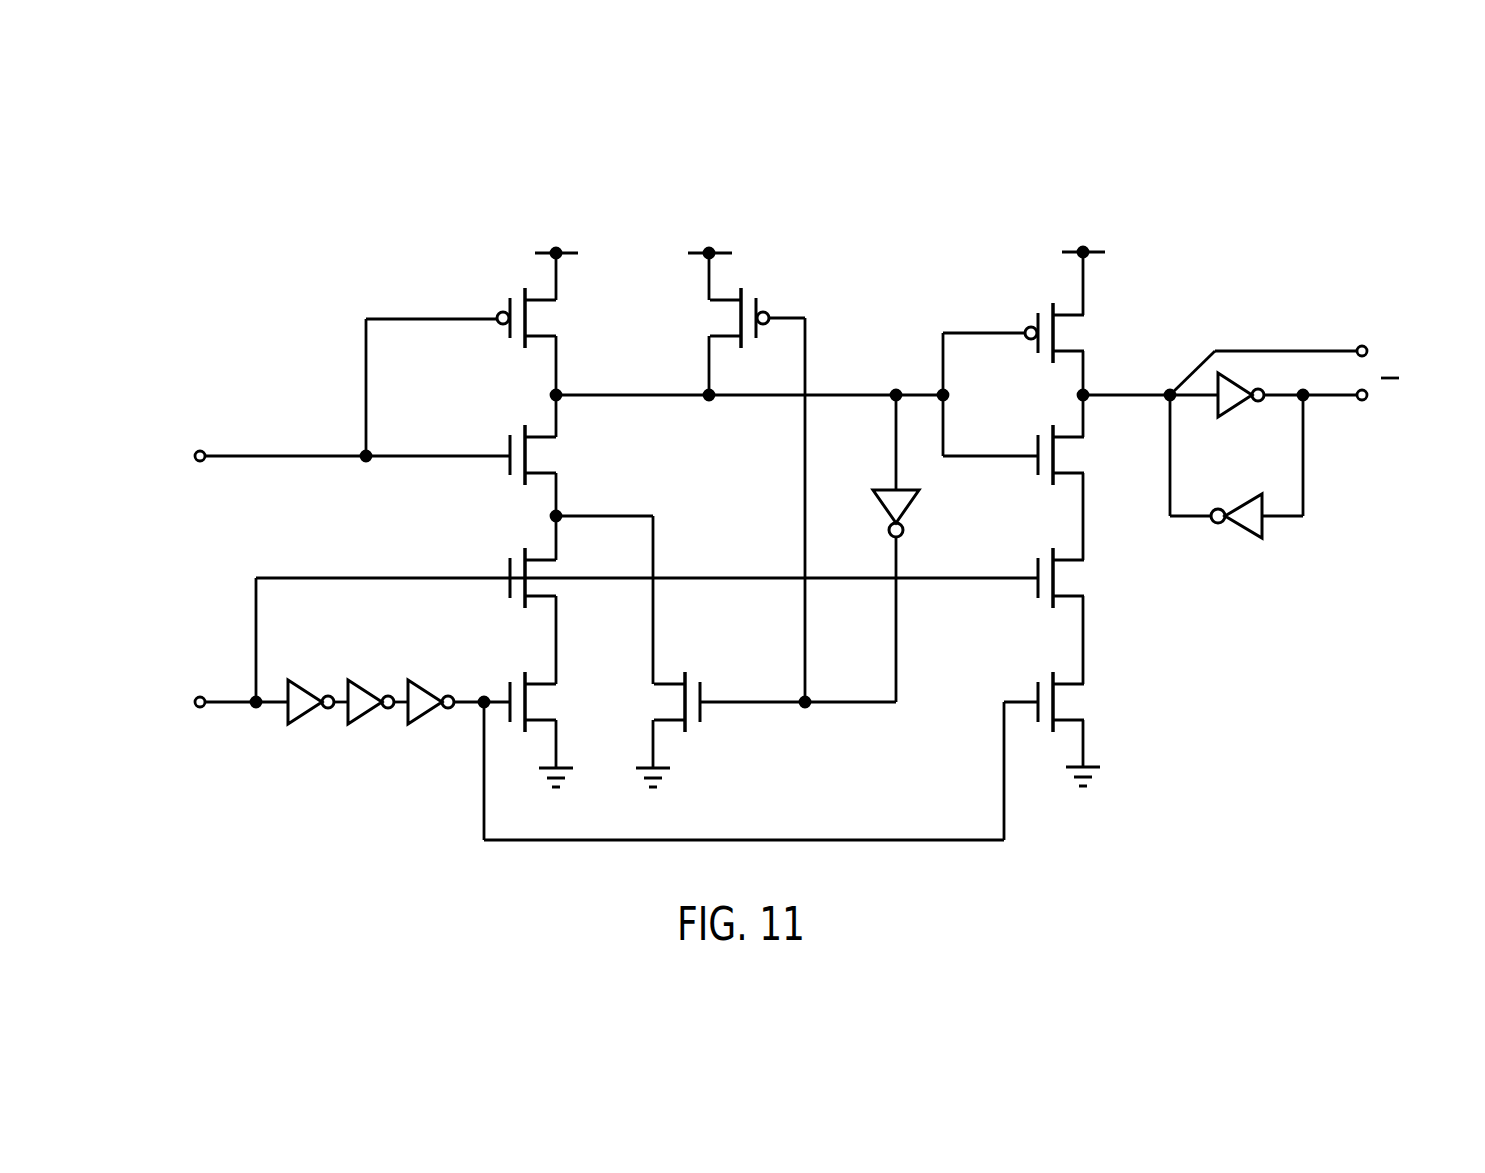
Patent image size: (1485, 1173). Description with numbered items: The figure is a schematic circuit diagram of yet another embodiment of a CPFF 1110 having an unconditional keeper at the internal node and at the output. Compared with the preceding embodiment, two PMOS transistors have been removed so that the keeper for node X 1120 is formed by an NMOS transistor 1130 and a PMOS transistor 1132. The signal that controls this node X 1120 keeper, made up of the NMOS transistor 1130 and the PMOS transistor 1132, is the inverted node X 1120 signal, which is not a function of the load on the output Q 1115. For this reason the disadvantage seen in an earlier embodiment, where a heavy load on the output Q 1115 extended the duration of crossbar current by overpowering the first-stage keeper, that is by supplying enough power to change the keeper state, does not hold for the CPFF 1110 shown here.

The CPFF 1110 is at (1212, 152).
The output Q 1115 is at (1390, 332).
The node X 1120 is at (857, 366).
The transistor Mn4 1130 is at (722, 644).
The transistor Mp2 1132 is at (792, 274).